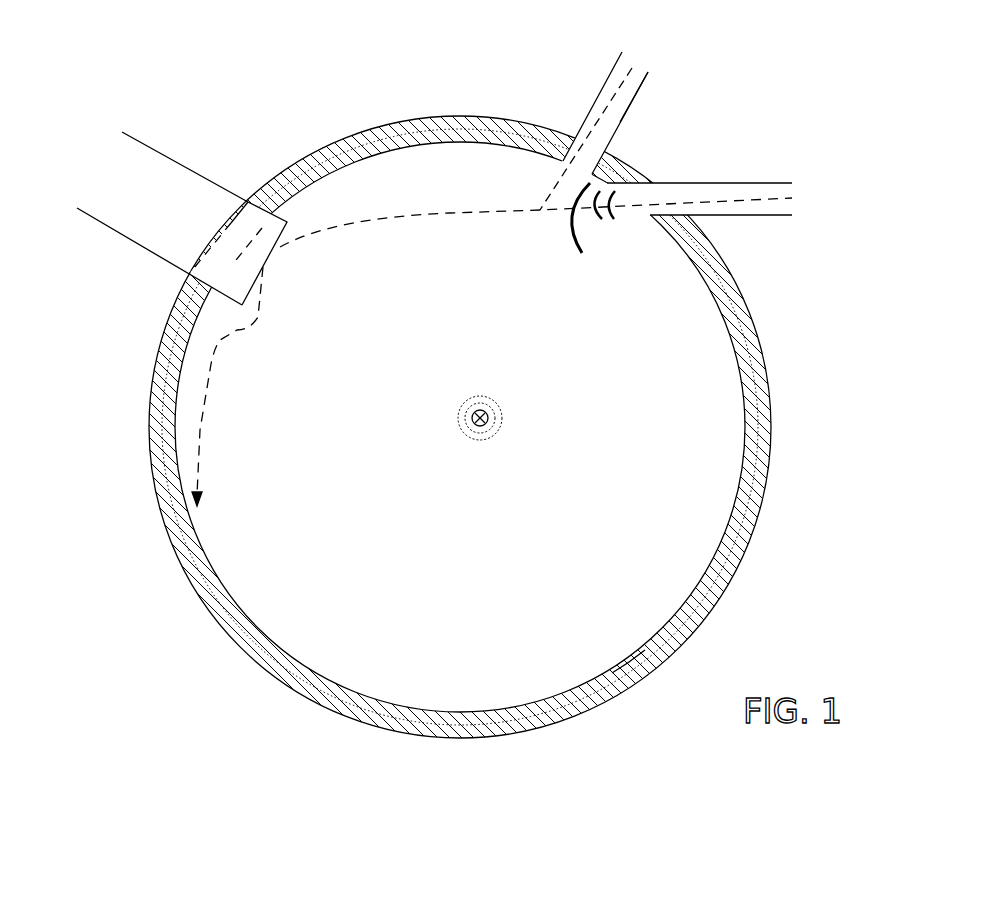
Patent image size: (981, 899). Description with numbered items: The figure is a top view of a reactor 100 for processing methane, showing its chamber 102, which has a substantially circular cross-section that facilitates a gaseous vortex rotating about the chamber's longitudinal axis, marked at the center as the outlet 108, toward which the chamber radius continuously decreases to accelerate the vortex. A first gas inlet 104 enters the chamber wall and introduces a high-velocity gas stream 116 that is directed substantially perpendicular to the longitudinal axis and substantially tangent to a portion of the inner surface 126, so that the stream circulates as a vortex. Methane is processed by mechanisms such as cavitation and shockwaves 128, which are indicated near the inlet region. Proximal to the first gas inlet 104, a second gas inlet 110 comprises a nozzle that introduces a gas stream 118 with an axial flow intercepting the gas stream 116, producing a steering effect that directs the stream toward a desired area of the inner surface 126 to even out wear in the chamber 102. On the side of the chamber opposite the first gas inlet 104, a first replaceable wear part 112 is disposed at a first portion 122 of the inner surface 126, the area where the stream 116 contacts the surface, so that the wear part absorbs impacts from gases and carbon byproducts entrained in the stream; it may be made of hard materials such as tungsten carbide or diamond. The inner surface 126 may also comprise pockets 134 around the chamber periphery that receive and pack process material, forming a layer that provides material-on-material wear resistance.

The reactor 100 is at (808, 296).
The chamber 102 is at (768, 478).
The first gas inlet 104 is at (755, 183).
The outlet 108 is at (490, 418).
The second gas inlet 110 is at (650, 72).
The first replaceable wear part 112 is at (132, 227).
The gas stream 116 is at (377, 222).
The gas stream 118 is at (632, 70).
The first portion 122 is at (245, 205).
The inner surface 126 is at (625, 662).
The shockwaves 128 is at (598, 218).
The pockets 134 is at (760, 393).